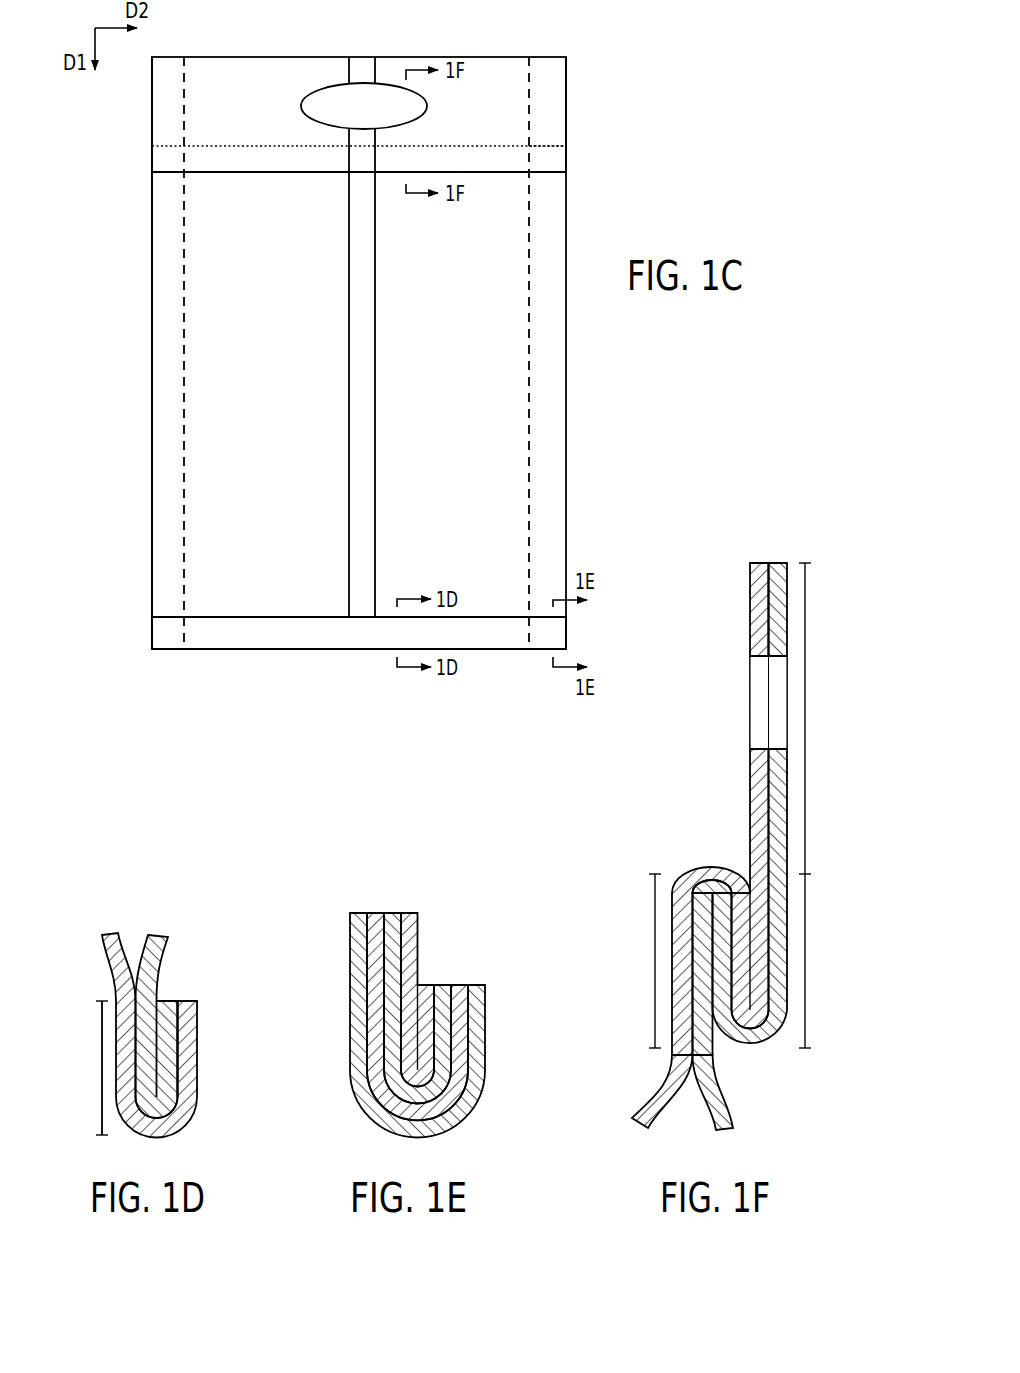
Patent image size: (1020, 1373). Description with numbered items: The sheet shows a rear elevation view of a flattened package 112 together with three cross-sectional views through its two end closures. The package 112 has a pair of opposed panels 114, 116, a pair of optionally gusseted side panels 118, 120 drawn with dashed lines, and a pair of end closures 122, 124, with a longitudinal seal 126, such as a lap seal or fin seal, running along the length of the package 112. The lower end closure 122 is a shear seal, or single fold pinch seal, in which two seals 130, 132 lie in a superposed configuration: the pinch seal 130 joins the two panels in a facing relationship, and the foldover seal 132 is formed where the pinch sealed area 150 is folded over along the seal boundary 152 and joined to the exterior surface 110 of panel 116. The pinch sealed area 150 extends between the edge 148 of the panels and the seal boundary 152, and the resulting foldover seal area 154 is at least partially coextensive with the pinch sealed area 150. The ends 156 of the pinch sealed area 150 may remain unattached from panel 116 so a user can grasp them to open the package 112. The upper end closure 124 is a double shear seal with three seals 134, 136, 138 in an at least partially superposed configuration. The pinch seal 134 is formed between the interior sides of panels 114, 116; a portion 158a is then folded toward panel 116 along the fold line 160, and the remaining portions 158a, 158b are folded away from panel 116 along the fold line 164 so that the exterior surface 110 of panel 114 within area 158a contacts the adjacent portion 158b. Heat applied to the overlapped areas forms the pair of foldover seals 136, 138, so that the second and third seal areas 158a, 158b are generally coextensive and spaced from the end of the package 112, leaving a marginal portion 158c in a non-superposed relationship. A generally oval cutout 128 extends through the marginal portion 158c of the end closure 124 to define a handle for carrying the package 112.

In FIG. 1C, the exterior surface 110 is at (276, 497).
In FIG. 1C, the package 112 is at (624, 63).
In FIG. 1C, the panel 114 is at (317, 640).
In FIG. 1D, the panel 114 is at (189, 1092).
In FIG. 1E, the panel 114 is at (478, 1086).
In FIG. 1F, the panel 114 is at (755, 563).
In FIG. 1C, the panel 116 is at (160, 244).
In FIG. 1D, the panel 116 is at (161, 959).
In FIG. 1E, the panel 116 is at (415, 929).
In FIG. 1F, the panel 116 is at (776, 563).
In FIG. 1C, the side panel 118 is at (548, 397).
In FIG. 1C, the side panel 120 is at (171, 392).
In FIG. 1E, the side panel 120 is at (465, 985).
In FIG. 1C, the end closure 122 is at (151, 634).
In FIG. 1D, the end closure 122 is at (226, 1001).
In FIG. 1E, the end closure 122 is at (481, 909).
In FIG. 1C, the end closure 124 is at (149, 57).
In FIG. 1F, the end closure 124 is at (697, 820).
In FIG. 1C, the longitudinal seal 126 is at (369, 357).
In FIG. 1C, the cutout 128 is at (320, 108).
In FIG. 1F, the cutout 128 is at (755, 695).
In FIG. 1D, the pinch seal 130 is at (177, 1057).
In FIG. 1E, the pinch seal 130 is at (488, 995).
In FIG. 1D, the foldover seal 132 is at (164, 1028).
In FIG. 1E, the foldover seal 132 is at (425, 1062).
In FIG. 1F, the pinch seal 134 is at (766, 612).
In FIG. 1F, the foldover seal 136 is at (727, 891).
In FIG. 1F, the foldover seal 138 is at (680, 893).
In FIG. 1C, the edge 148 is at (262, 617).
In FIG. 1C, the pinch sealed area 150 is at (549, 634).
In FIG. 1D, the pinch sealed area 150 is at (62, 1068).
In FIG. 1C, the seal boundary 152 is at (224, 652).
In FIG. 1C, the foldover seal area 154 is at (549, 634).
In FIG. 1D, the foldover seal area 154 is at (108, 1135).
In FIG. 1C, the ends 156 is at (168, 653).
In FIG. 1C, the foldover sealed area 158a is at (570, 146).
In FIG. 1F, the foldover sealed area 158a is at (632, 961).
In FIG. 1C, the foldover sealed area 158b is at (582, 159).
In FIG. 1F, the foldover sealed area 158b is at (825, 961).
In FIG. 1C, the marginal portion 158c is at (570, 57).
In FIG. 1F, the marginal portion 158c is at (824, 718).
In FIG. 1C, the fold line 160 is at (205, 147).
In FIG. 1F, the fold line 160 is at (643, 876).
In FIG. 1C, the fold line 164 is at (206, 173).
In FIG. 1F, the fold line 164 is at (817, 1048).